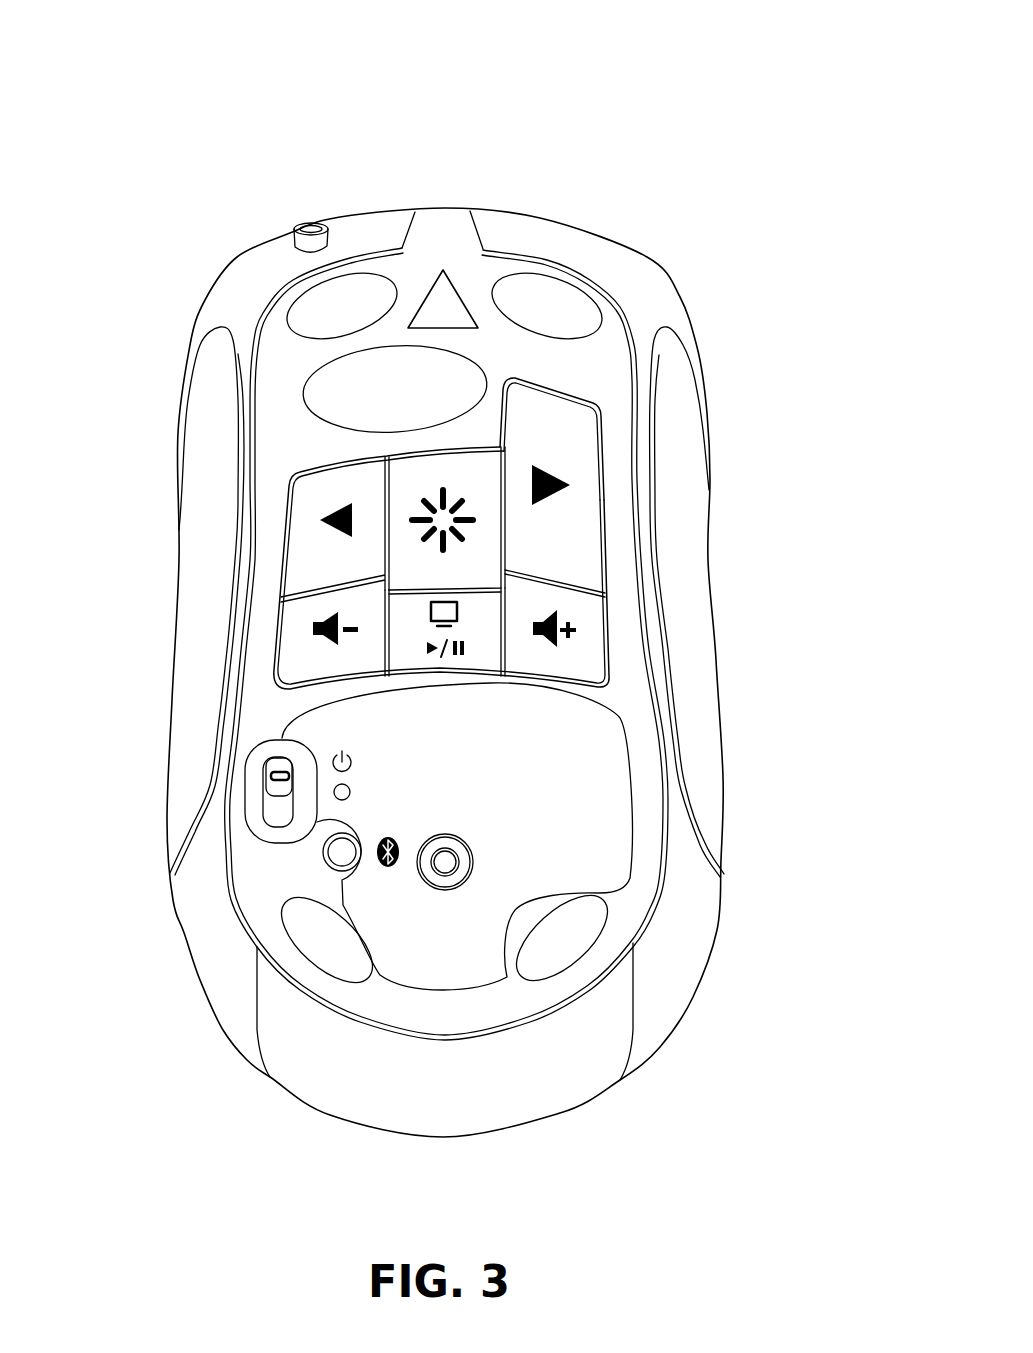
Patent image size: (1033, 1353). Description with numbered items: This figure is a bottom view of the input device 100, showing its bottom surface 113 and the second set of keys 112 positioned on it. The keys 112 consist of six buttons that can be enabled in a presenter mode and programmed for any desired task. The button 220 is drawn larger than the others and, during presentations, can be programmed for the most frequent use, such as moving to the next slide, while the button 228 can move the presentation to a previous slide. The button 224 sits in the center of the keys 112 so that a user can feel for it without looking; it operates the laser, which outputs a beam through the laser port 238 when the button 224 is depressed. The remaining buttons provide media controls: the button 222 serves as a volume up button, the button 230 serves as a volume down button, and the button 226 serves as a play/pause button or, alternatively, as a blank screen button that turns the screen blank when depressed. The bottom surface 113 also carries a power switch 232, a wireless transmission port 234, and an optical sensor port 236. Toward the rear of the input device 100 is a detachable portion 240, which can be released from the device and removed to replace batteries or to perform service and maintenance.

The input device 100 is at (327, 117).
The bottom surface 113 is at (445, 230).
The laser port 238 is at (310, 223).
The button 220 is at (572, 425).
The second set of keys 112 is at (555, 505).
The button 224 is at (445, 473).
The button 228 is at (303, 533).
The button 230 is at (303, 622).
The button 222 is at (587, 660).
The button 226 is at (410, 650).
The power switch 232 is at (267, 780).
The wireless transmission port 234 is at (320, 852).
The optical sensor port 236 is at (447, 836).
The detachable portion 240 is at (460, 1092).